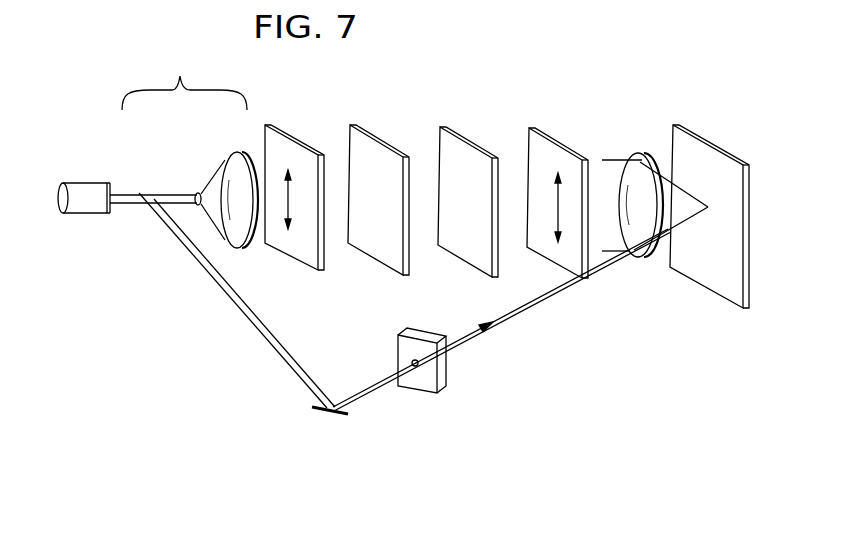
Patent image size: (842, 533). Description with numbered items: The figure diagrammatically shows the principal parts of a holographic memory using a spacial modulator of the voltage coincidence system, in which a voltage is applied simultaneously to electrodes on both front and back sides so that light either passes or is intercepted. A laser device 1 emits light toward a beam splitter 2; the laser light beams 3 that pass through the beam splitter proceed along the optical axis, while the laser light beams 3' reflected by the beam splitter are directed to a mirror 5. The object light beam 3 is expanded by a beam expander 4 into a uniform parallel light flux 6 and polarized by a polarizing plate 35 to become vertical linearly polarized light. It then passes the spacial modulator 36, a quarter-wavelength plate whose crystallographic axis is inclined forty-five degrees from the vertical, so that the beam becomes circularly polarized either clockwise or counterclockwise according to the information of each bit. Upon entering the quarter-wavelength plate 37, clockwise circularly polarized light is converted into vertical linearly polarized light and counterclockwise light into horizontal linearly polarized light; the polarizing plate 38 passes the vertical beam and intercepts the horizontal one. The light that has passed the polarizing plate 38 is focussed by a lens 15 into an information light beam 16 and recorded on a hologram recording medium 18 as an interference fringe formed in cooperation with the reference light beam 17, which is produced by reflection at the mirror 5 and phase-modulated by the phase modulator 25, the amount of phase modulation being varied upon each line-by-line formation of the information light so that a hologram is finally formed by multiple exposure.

The laser device 1 is at (92, 186).
The beam splitter 2 is at (151, 194).
The laser light beams 3 is at (185, 177).
The laser light beams 3' is at (237, 300).
The beam expander 4 is at (184, 75).
The mirror 5 is at (348, 414).
The uniform parallel light flux 6 is at (258, 155).
The lens 15 is at (635, 155).
The information light beam 16 is at (667, 190).
The reference light beam 17 is at (463, 345).
The hologram recording medium 18 is at (695, 146).
The phase modulator 25 is at (428, 395).
The polarizing plate 35 is at (289, 141).
The spacial modulator 36 is at (373, 140).
The quarter-wavelength plate 37 is at (460, 143).
The polarizing plate 38 is at (552, 150).